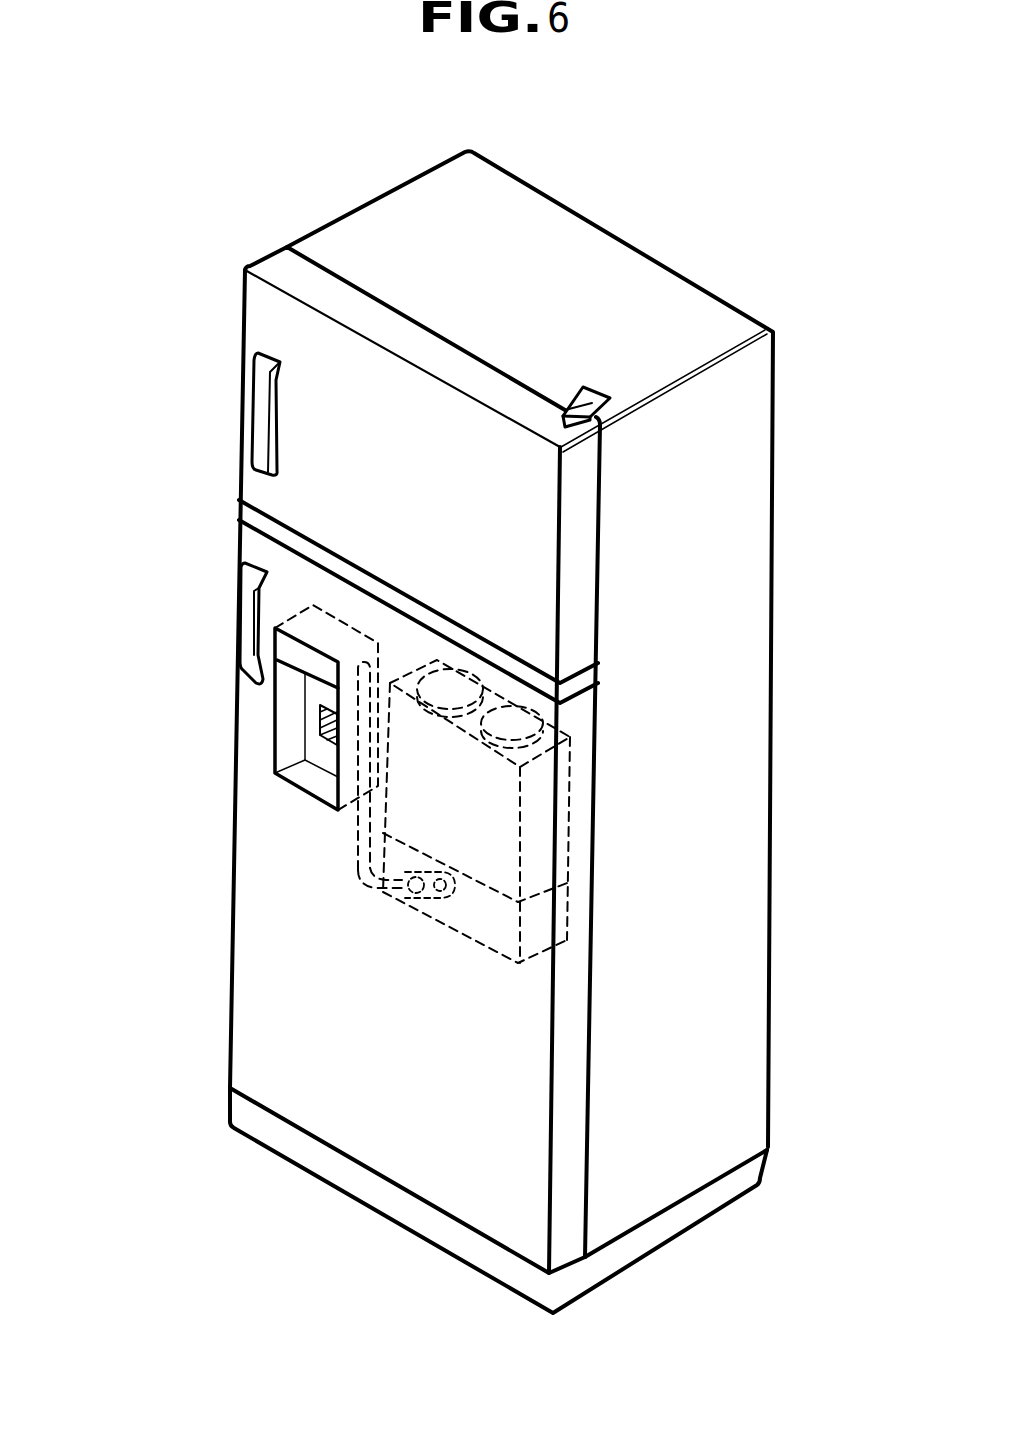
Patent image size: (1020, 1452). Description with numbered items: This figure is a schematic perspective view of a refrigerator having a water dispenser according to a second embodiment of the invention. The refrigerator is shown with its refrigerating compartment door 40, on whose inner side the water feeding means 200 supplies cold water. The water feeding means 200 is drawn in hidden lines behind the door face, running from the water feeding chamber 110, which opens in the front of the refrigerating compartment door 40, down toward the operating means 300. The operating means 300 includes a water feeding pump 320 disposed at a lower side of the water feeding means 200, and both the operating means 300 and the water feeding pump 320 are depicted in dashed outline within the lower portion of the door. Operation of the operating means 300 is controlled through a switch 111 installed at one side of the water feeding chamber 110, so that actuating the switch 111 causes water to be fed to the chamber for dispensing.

The refrigerating compartment door 40 is at (255, 932).
The water feeding chamber 110 is at (310, 752).
The switch 111 is at (322, 727).
The water feeding means 200 is at (418, 815).
The operating means 300 is at (480, 930).
The water feeding pump 320 is at (415, 893).